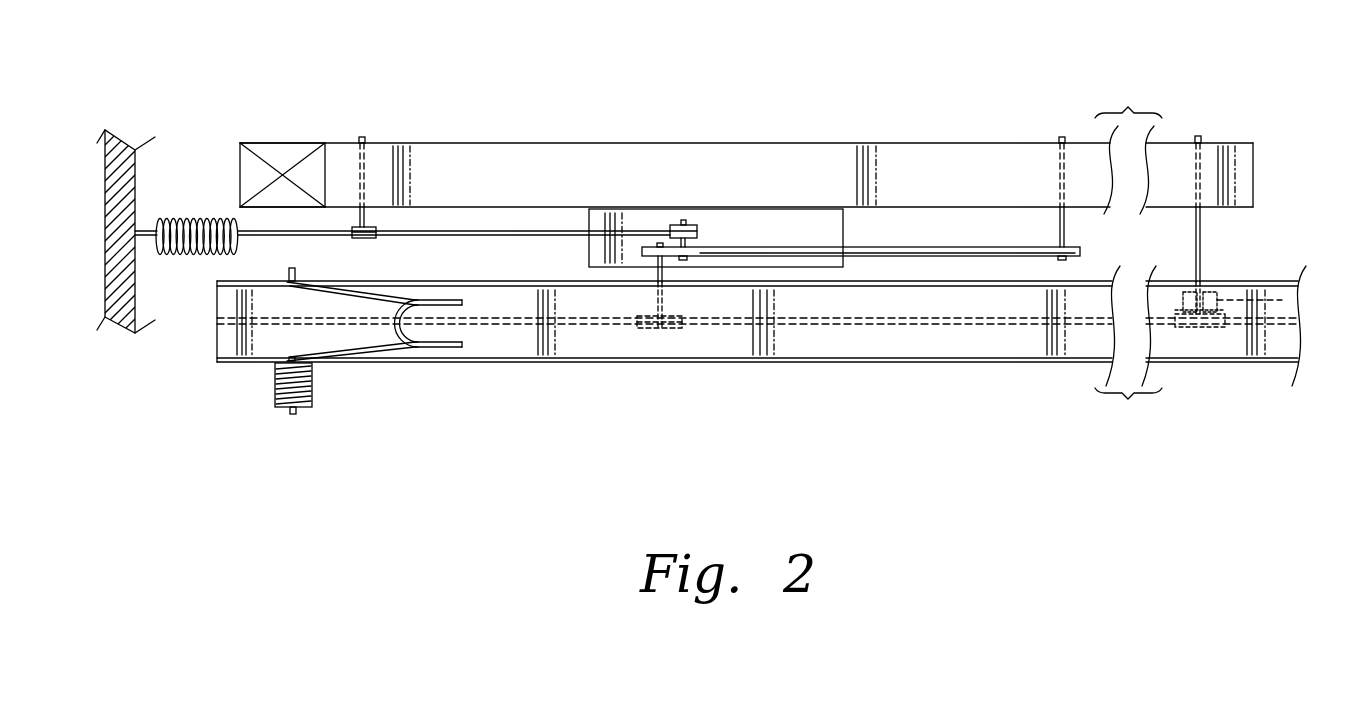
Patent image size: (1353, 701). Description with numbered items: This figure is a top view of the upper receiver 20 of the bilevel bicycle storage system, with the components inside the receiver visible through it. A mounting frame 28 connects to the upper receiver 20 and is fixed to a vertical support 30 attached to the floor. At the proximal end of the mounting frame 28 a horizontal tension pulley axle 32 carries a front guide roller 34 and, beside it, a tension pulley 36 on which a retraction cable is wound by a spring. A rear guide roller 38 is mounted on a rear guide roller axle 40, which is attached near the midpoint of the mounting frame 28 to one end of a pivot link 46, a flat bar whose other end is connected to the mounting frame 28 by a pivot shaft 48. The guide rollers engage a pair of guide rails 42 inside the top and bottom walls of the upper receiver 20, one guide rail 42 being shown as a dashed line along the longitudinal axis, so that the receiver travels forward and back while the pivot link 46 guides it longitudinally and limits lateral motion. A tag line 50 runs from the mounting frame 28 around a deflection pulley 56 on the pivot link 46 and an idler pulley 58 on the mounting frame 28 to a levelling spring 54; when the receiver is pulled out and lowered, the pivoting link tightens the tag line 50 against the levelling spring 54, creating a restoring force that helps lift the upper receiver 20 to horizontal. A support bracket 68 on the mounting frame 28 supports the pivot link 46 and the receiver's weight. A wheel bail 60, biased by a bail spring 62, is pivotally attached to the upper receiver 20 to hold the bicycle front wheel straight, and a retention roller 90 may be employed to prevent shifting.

The upper receiver 20 is at (1012, 335).
The mounting frame 28 is at (553, 162).
The vertical support 30 is at (282, 165).
The tension pulley axle 32 is at (1200, 135).
The front guide roller 34 is at (1210, 327).
The tension pulley 36 is at (1245, 300).
The rear guide roller 38 is at (660, 328).
The rear guide roller axle 40 is at (663, 272).
The guide rail 42 is at (235, 330).
The pivot link 46 is at (1010, 246).
The pivot shaft 48 is at (1063, 136).
The tag line 50 is at (285, 235).
The levelling spring 54 is at (200, 222).
The deflection pulley 56 is at (689, 223).
The idler pulley 58 is at (365, 240).
The wheel bail 60 is at (403, 357).
The bail spring 62 is at (312, 408).
The support bracket 68 is at (820, 227).
The retention roller 90 is at (367, 219).